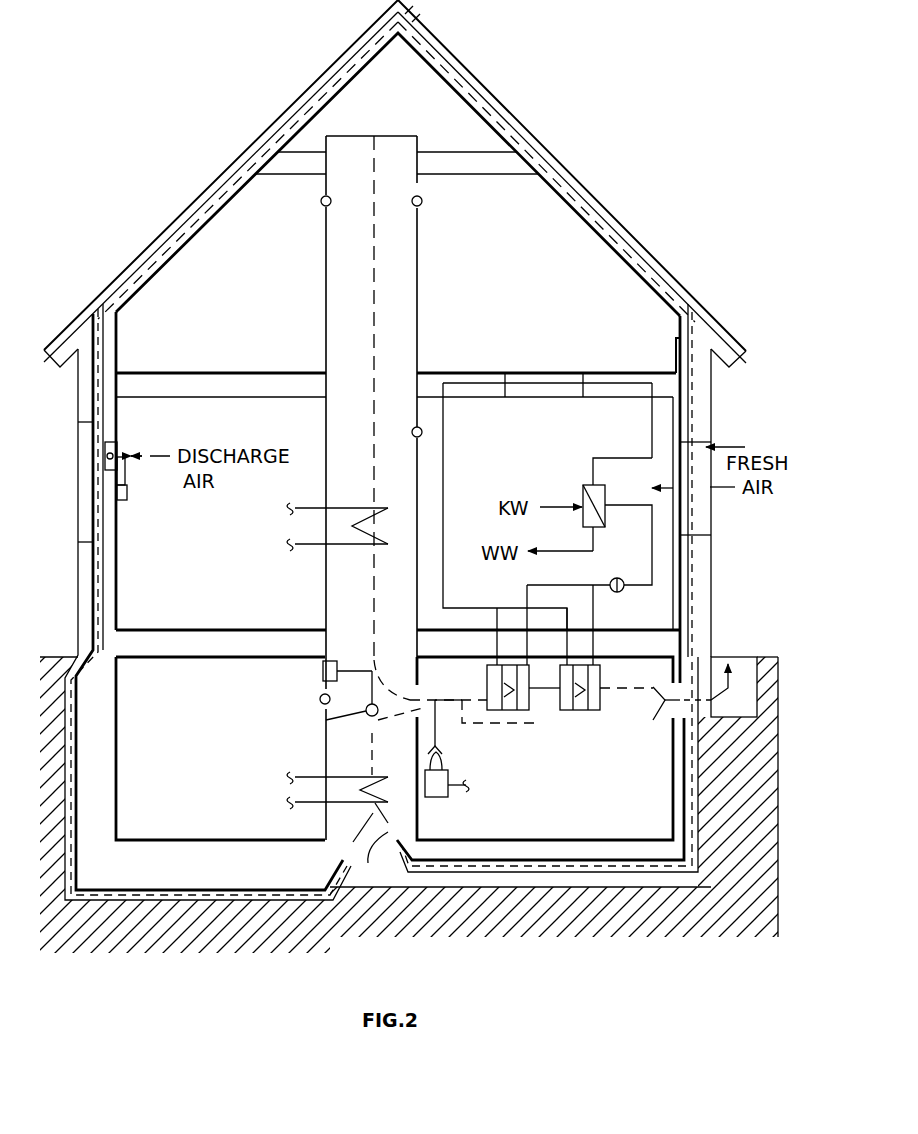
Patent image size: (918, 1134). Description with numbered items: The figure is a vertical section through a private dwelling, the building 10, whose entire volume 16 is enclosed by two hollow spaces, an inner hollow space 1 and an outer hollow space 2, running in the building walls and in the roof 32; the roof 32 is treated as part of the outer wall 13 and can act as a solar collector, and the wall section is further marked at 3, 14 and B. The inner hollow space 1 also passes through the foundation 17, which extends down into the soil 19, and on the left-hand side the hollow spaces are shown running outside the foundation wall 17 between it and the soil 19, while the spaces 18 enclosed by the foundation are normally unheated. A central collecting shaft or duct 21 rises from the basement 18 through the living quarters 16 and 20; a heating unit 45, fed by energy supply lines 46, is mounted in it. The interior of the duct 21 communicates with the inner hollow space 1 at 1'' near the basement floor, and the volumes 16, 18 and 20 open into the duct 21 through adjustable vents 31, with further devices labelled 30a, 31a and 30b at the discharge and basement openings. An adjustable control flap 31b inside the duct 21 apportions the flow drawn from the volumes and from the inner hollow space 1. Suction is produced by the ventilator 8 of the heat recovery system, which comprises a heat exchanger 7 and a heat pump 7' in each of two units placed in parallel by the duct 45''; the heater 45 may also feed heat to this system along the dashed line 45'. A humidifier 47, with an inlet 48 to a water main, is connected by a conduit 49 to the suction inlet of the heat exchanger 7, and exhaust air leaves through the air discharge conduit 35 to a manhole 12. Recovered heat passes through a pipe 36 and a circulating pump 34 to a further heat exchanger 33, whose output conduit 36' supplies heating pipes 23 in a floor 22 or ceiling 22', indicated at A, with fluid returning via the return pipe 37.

The inner hollow space 1 is at (214, 473).
The fluid communication between duct and inner hollow space 1'' is at (368, 839).
The outer hollow space 2 is at (90, 626).
The wall connection 3 is at (93, 556).
The heat exchanger 7 is at (517, 703).
The heat pump 7' is at (543, 636).
The ventilator 8 is at (522, 688).
The building 10 is at (643, 222).
The manhole 12 is at (747, 655).
The outer wall 13 is at (669, 262).
The edge element 14 is at (410, 14).
The volume of the building 16 is at (528, 259).
The foundation 17 is at (97, 722).
The basement spaces 18 is at (224, 772).
The soil 19 is at (397, 923).
The living quarters 20 is at (220, 572).
The central collecting shaft 21 is at (340, 64).
The floor 22 is at (547, 353).
The ceiling 22' is at (538, 414).
The heating pipes 23 is at (576, 383).
The discharge air fan 30a is at (127, 494).
The basement fan 30b is at (330, 660).
The adjustable vents 31 is at (321, 203).
The discharge damper 31a is at (115, 446).
The adjustable control flap 31b is at (343, 722).
The roof 32 is at (538, 116).
The further heat exchanger 33 is at (584, 488).
The circulating pump 34 is at (621, 592).
The air discharge conduit 35 is at (654, 722).
The pipe 36 is at (566, 614).
The output conduit 36' is at (625, 420).
The return pipe 37 is at (443, 474).
The heating unit 45 is at (352, 469).
The dashed line 45' is at (429, 662).
The duct 45'' is at (504, 728).
The energy supply lines 46 is at (286, 542).
The humidifier 47 is at (437, 797).
The inlet 48 is at (468, 778).
The conduit 49 is at (437, 730).
The air flow A is at (545, 373).
The wall channel B is at (78, 488).